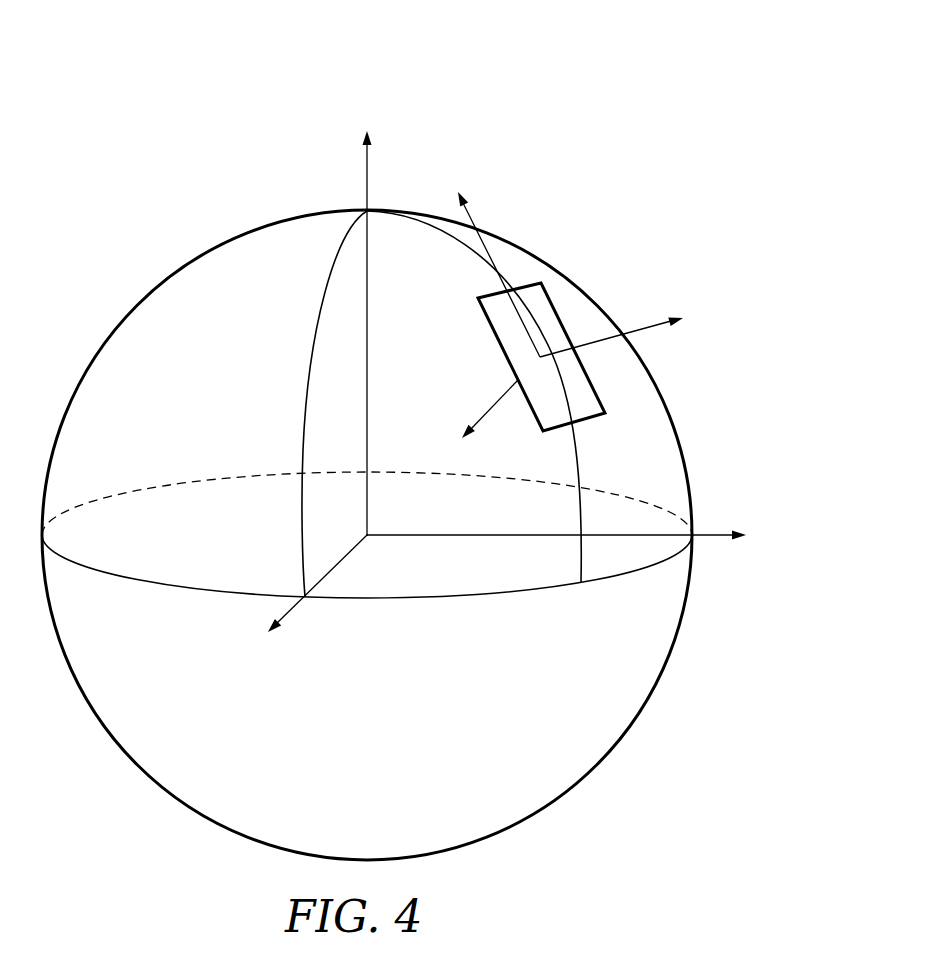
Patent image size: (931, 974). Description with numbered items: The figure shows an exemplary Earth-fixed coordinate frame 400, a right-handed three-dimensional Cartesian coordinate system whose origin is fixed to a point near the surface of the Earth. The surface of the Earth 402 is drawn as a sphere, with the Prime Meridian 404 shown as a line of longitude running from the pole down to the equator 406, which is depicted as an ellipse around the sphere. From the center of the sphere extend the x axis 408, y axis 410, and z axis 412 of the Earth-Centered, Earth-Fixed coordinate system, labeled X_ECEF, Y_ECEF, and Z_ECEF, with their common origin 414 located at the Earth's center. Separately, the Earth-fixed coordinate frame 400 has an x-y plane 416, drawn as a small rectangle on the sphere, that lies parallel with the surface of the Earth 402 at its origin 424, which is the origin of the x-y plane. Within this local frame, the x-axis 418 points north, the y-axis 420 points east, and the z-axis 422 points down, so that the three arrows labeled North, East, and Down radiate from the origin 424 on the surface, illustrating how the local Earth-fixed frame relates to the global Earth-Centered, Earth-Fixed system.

The Earth-fixed coordinate frame 400 is at (138, 186).
The surface of the Earth 402 is at (242, 232).
The Prime Meridian 404 is at (323, 290).
The equator 406 is at (163, 582).
The x axis 408 is at (260, 633).
The y axis 410 is at (748, 528).
The z axis 412 is at (368, 90).
The origin 414 is at (368, 537).
The x-y plane 416 is at (493, 305).
The x-axis 418 is at (493, 170).
The y-axis 420 is at (718, 292).
The z-axis 422 is at (440, 442).
The origin 424 is at (540, 357).